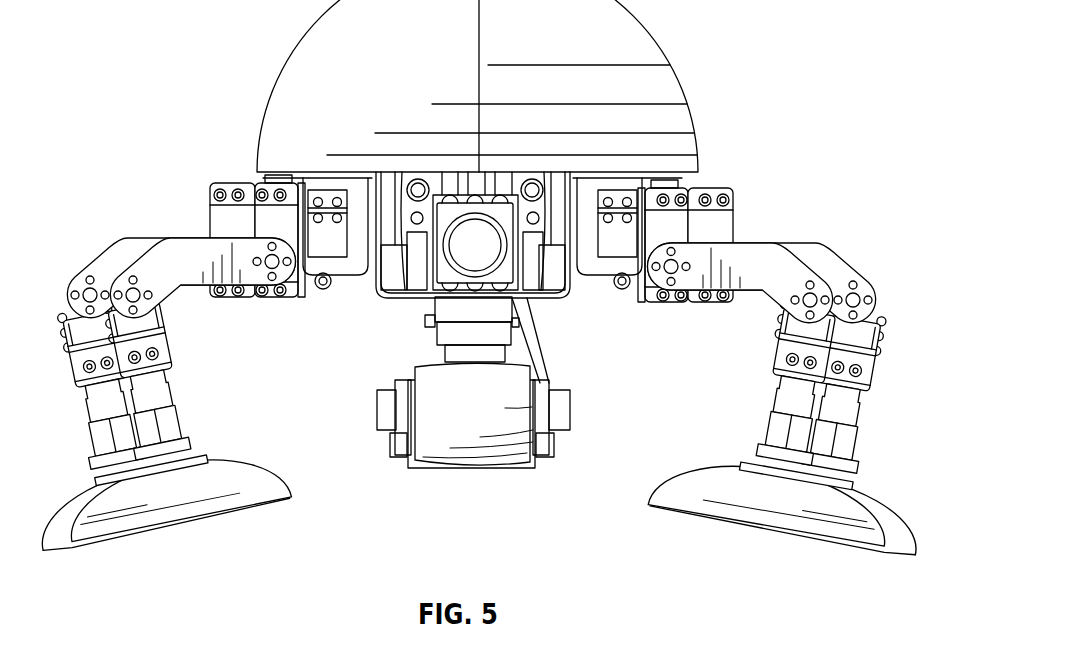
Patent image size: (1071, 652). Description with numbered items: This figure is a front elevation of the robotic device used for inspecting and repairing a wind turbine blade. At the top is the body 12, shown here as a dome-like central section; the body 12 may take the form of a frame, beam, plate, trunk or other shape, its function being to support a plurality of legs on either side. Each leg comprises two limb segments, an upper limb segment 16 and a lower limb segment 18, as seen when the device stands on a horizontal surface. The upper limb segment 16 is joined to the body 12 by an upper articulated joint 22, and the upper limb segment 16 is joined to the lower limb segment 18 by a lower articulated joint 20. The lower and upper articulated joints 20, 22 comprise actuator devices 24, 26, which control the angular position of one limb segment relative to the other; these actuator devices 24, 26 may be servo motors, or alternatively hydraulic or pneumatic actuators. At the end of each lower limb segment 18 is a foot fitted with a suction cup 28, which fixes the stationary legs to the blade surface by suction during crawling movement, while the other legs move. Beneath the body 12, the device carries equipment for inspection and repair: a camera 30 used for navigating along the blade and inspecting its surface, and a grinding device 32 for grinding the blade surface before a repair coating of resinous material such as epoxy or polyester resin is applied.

The body 12 is at (633, 48).
The upper limb segment 16 is at (815, 240).
The lower limb segment 18 is at (867, 383).
The lower articulated joint 20 is at (857, 293).
The upper articulated joint 22 is at (652, 291).
The actuator device 24 is at (885, 333).
The actuator device 26 is at (703, 186).
The suction cup 28 is at (887, 524).
The camera 30 is at (452, 276).
The grinding device 32 is at (470, 464).